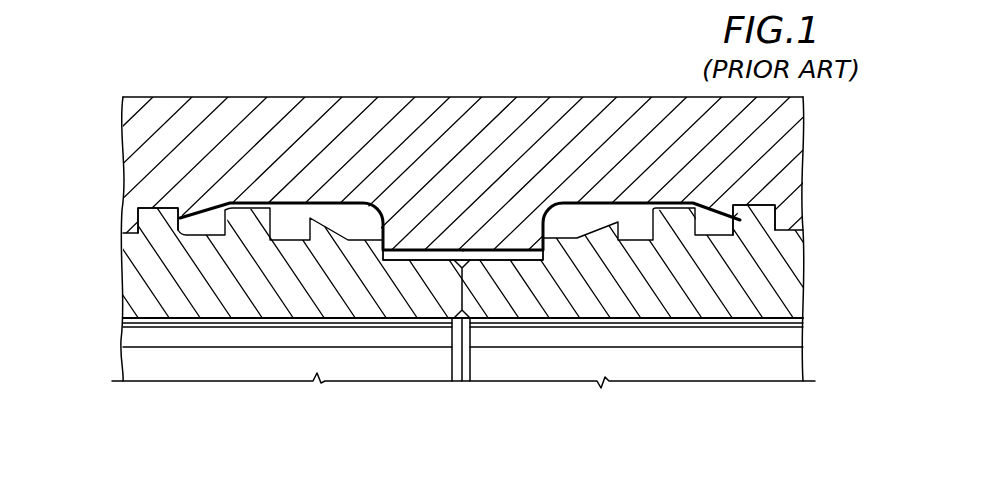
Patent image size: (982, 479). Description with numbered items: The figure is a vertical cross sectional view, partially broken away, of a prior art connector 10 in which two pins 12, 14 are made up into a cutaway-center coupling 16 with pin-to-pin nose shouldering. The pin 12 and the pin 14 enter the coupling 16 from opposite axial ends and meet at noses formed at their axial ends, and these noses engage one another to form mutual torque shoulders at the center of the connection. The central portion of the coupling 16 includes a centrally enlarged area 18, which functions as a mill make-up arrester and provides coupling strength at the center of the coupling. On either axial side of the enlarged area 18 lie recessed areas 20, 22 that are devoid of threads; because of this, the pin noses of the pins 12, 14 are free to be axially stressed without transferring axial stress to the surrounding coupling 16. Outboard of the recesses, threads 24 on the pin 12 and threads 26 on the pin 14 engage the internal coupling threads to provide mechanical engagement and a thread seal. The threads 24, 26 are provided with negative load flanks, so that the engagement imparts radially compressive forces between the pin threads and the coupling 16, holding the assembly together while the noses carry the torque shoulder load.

The connector 10 is at (110, 70).
The pin 12 is at (272, 318).
The pin 14 is at (648, 318).
The coupling 16 is at (204, 118).
The centrally enlarged area 18 is at (483, 242).
The recessed area 20 is at (597, 203).
The recessed area 22 is at (335, 202).
The threads 24 is at (160, 207).
The threads 26 is at (778, 222).